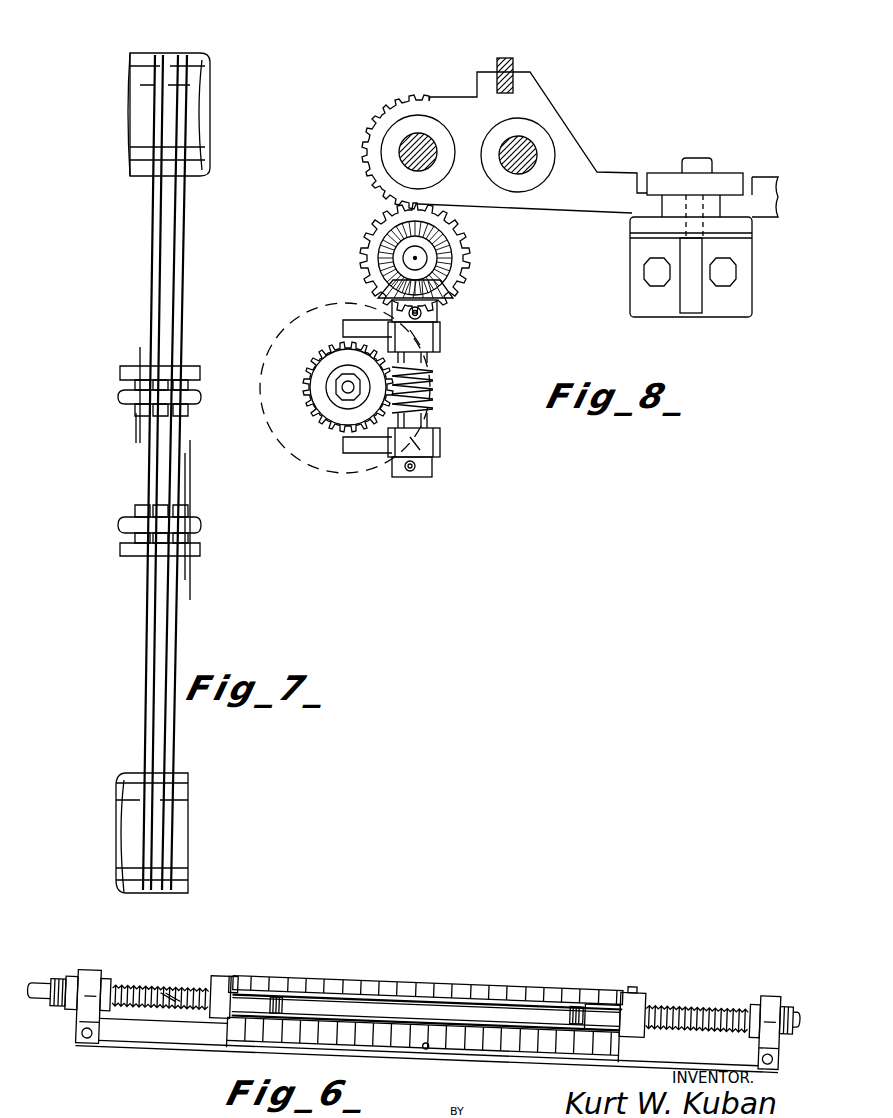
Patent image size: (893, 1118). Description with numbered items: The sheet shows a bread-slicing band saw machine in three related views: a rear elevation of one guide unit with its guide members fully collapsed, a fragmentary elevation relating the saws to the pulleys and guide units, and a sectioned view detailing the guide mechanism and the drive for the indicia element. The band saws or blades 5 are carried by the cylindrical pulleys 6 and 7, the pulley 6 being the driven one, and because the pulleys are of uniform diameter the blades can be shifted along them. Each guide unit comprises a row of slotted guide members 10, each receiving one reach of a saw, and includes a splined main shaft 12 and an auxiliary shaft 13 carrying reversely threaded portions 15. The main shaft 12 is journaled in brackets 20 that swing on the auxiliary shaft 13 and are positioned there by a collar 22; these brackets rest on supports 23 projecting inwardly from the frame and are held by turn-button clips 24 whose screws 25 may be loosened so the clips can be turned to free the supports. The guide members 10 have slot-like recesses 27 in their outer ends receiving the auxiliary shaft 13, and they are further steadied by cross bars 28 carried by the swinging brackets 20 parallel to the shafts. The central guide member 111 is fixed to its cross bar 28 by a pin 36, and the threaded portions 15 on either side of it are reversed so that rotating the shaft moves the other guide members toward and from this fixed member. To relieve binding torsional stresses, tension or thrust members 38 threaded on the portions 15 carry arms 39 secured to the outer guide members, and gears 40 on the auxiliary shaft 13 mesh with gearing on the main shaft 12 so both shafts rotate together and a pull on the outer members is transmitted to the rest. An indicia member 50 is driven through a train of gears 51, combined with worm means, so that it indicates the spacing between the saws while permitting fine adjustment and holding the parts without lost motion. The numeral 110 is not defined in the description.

In FIG. 7, the band saws or blades 5 is at (165, 239).
In FIG. 7, the pulley 6 is at (128, 780).
In FIG. 7, the pulley 7 is at (144, 72).
In FIG. 7, the guide members 10 is at (142, 373).
In FIG. 6, the guide members 10 is at (305, 980).
In FIG. 8, the main shaft 12 is at (525, 150).
In FIG. 7, the auxiliary shaft 13 is at (196, 404).
In FIG. 8, the auxiliary shaft 13 is at (420, 140).
In FIG. 6, the auxiliary shaft 13 is at (149, 988).
In FIG. 6, the reversely threaded portions 15 is at (122, 985).
In FIG. 8, the brackets 20 is at (572, 205).
In FIG. 6, the brackets 20 is at (91, 985).
In FIG. 6, the collar 22 is at (105, 1012).
In FIG. 8, the supports 23 is at (650, 306).
In FIG. 8, the clips 24 is at (657, 170).
In FIG. 8, the screws 25 is at (697, 160).
In FIG. 6, the slot-like recesses 27 is at (371, 985).
In FIG. 7, the cross bars 28 is at (196, 366).
In FIG. 8, the cross bars 28 is at (513, 76).
In FIG. 6, the cross bars 28 is at (150, 1040).
In FIG. 6, the pin 36 is at (426, 1038).
In FIG. 6, the tension or thrust members 38 is at (213, 984).
In FIG. 6, the arms 39 is at (234, 978).
In FIG. 6, the gears 40 is at (60, 1006).
In FIG. 8, the indicia member 50 is at (322, 473).
In FIG. 8, the train of gears 51 is at (453, 282).
In FIG. 6, the lower rack 110 is at (240, 1040).
In FIG. 6, the central guide member 111 is at (429, 980).